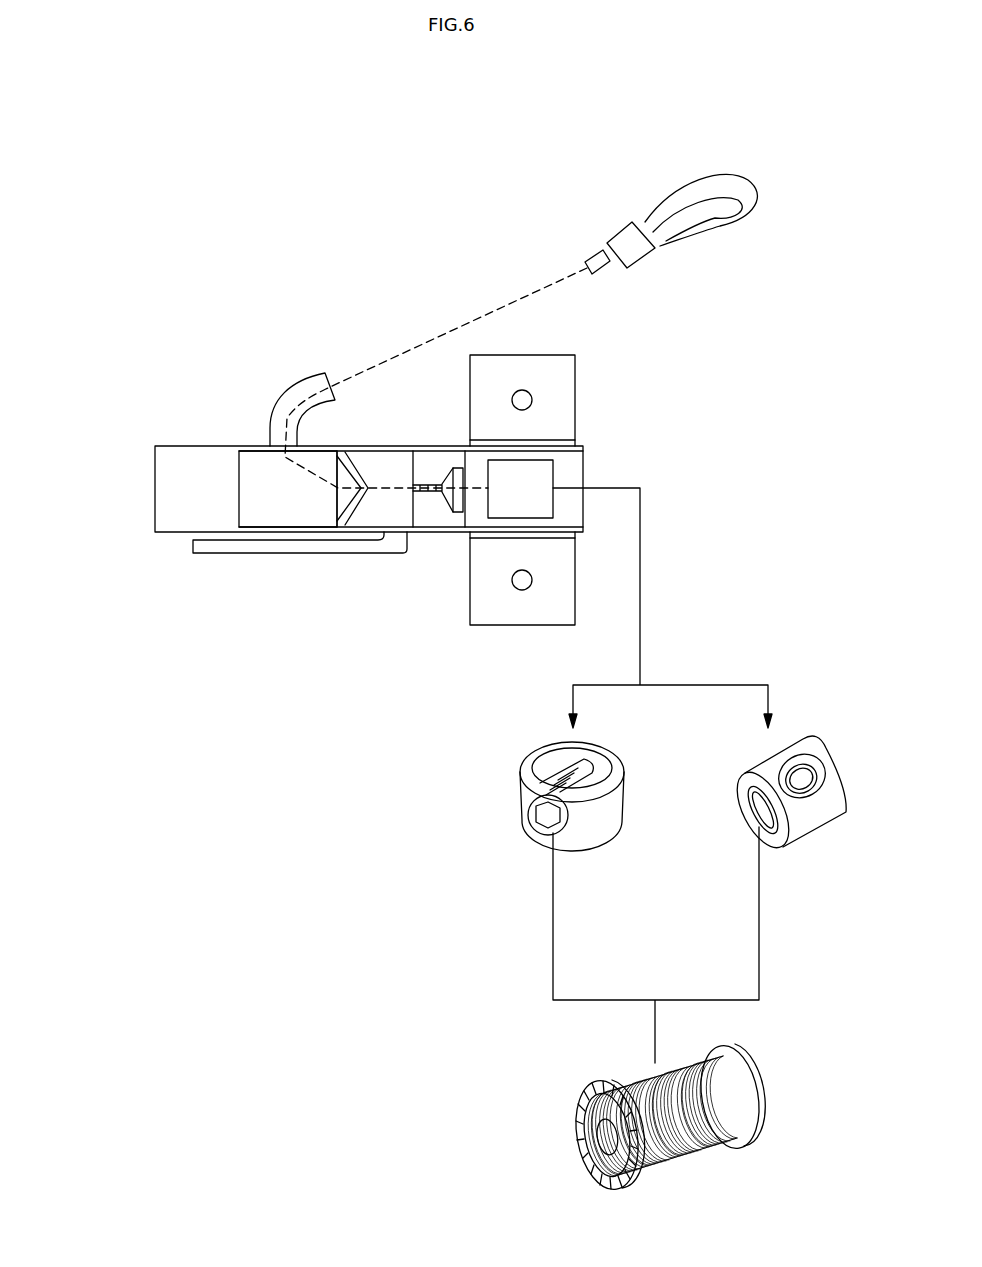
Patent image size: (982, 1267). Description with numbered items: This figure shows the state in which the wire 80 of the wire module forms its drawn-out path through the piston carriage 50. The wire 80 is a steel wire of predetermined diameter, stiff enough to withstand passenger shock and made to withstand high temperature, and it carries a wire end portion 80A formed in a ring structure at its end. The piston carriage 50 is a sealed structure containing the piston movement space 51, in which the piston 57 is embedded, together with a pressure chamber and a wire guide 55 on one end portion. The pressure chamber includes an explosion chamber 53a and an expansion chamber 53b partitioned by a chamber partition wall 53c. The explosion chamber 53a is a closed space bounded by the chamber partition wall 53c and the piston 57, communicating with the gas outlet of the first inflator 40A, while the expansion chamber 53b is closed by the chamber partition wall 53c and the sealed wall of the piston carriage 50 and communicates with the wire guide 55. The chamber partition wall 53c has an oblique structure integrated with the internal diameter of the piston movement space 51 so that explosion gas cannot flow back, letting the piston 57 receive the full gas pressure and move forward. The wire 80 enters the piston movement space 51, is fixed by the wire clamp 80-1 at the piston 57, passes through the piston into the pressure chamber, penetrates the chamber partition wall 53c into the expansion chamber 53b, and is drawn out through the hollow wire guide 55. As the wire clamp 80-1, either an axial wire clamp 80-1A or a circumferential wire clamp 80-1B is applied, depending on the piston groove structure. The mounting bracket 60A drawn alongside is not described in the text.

The first inflator 40A is at (216, 548).
The piston carriage 50 is at (165, 513).
The piston movement space 51 is at (580, 468).
The explosion chamber 53a is at (400, 460).
The expansion chamber 53b is at (328, 458).
The chamber partition wall 53c is at (348, 500).
The wire guide 55 is at (277, 403).
The piston 57 is at (437, 520).
The mounting bracket 60A is at (565, 402).
The wire 80 is at (447, 330).
The wire end portion 80A is at (705, 180).
The wire clamp 80-1 is at (505, 510).
The axial wire clamp 80-1A is at (597, 823).
The circumferential wire clamp 80-1B is at (740, 790).